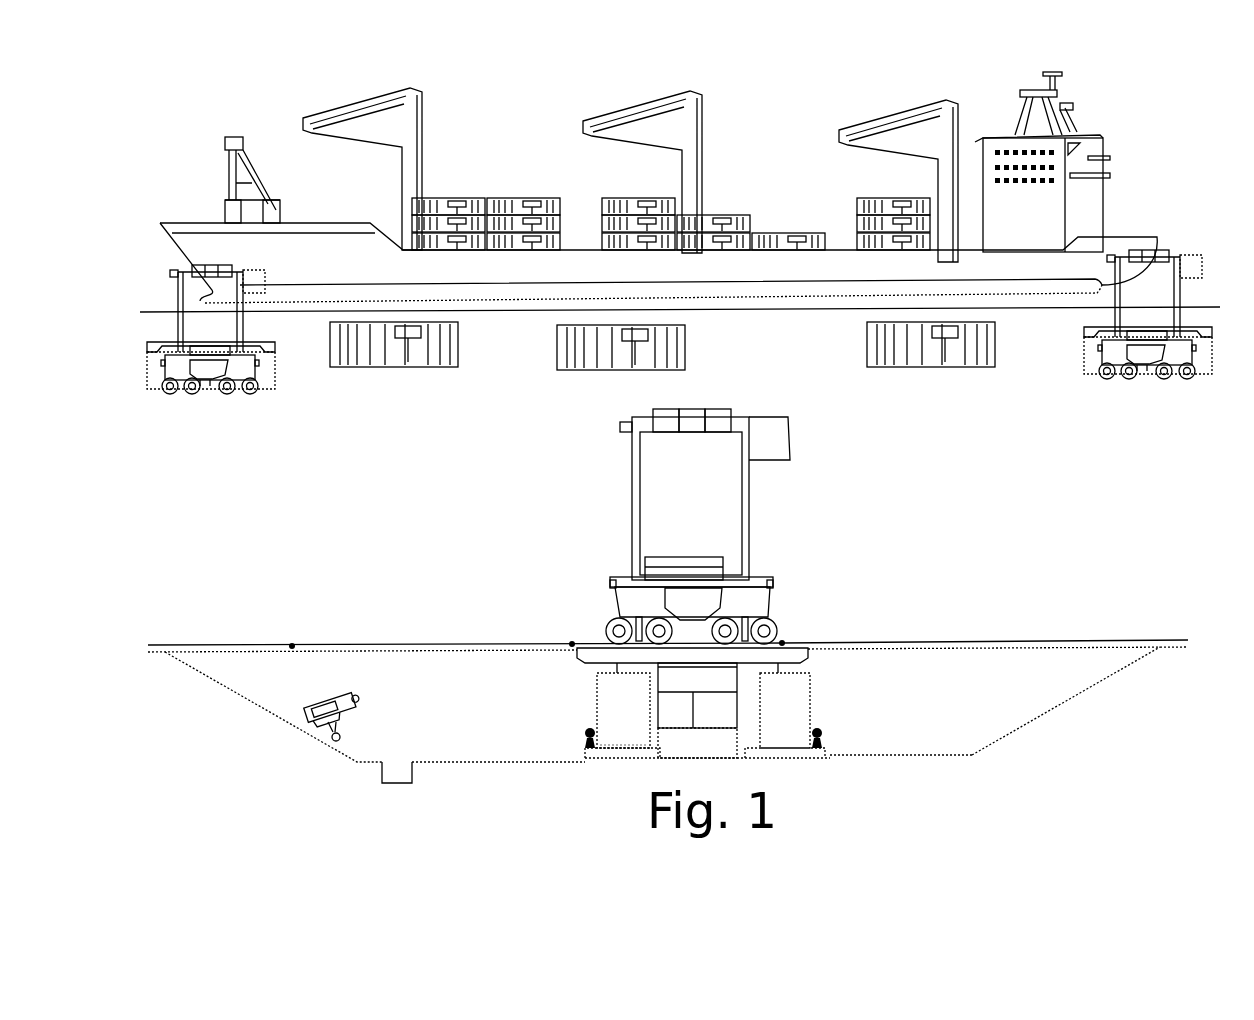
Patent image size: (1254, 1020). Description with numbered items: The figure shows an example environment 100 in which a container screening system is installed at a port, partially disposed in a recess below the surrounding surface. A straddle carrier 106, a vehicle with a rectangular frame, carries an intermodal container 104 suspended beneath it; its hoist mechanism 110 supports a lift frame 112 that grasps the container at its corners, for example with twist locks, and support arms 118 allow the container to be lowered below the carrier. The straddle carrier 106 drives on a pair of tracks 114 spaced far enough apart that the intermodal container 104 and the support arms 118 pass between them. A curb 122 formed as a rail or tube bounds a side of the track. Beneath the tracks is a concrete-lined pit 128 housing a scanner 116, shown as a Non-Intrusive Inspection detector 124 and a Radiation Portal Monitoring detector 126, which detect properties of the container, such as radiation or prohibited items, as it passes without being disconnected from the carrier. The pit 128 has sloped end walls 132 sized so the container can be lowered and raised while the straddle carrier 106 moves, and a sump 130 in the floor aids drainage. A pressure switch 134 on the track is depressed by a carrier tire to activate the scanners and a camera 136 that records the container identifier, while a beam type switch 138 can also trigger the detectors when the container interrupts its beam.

The environment 100 is at (1050, 470).
The intermodal container 104 is at (585, 693).
The straddle carrier 106 is at (783, 493).
The hoist mechanism 110 is at (618, 420).
The lift frame 112 is at (590, 648).
The tracks 114 is at (948, 640).
The scanner 116 is at (880, 693).
The support arms 118 is at (750, 625).
The curb 122 is at (373, 640).
The Non-Intrusive Inspection detector 124 is at (805, 688).
The Radiation Portal Monitoring detector 126 is at (614, 733).
The pit 128 is at (1020, 700).
The sump 130 is at (400, 762).
The sloped end walls 132 is at (250, 703).
The pressure switch 134 is at (292, 645).
The camera 136 is at (330, 695).
The beam type switch 138 is at (825, 727).